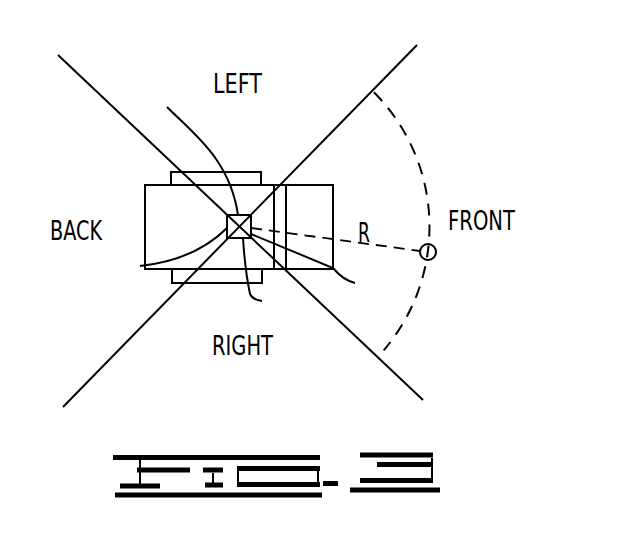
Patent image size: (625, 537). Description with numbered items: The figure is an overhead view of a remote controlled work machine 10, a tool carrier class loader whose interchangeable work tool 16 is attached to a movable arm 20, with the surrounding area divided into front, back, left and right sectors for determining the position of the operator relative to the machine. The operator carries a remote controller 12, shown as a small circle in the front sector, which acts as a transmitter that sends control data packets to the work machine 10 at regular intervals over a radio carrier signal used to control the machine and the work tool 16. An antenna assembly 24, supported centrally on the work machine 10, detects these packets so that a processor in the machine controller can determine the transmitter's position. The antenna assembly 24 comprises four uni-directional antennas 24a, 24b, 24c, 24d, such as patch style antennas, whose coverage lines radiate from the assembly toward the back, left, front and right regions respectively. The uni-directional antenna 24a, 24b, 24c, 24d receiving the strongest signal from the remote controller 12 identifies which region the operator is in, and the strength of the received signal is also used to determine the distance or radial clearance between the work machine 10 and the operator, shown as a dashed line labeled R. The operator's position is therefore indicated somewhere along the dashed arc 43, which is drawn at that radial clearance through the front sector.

The work machine 10 is at (145, 186).
The remote controller 12 is at (434, 259).
The work tool 16 is at (333, 206).
The movable arm 20 is at (274, 187).
The antenna assembly 24 is at (230, 240).
The uni-directional antenna 24a is at (145, 266).
The uni-directional antenna 24b is at (181, 149).
The uni-directional antenna 24c is at (323, 266).
The uni-directional antenna 24d is at (271, 278).
The dashed arc 43 is at (410, 312).